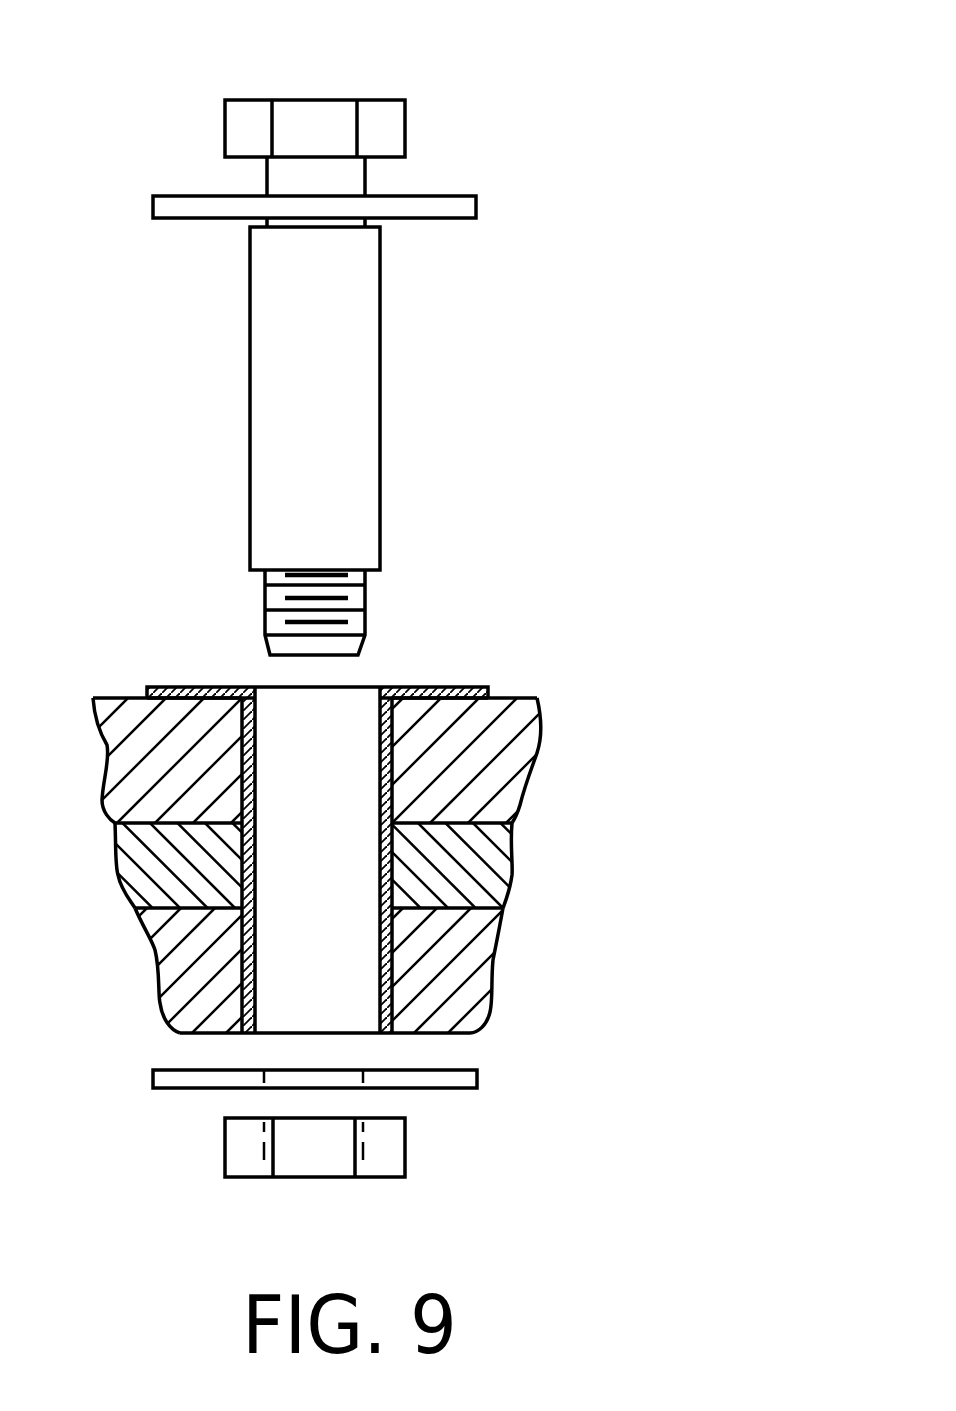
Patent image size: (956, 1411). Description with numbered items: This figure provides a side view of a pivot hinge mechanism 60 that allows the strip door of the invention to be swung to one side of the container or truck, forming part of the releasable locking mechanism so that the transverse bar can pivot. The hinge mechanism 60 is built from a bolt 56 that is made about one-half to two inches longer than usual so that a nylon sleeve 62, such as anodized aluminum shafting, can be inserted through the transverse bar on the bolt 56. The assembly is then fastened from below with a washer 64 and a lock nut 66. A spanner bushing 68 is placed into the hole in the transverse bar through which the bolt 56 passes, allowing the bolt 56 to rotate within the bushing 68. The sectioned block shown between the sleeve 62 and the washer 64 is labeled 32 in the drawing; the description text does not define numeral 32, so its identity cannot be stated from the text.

The hinge mechanism 60 is at (657, 120).
The bolt 56 is at (388, 106).
The nylon sleeve 62 is at (382, 396).
The spanner bushing 68 is at (485, 687).
The panel 32 is at (522, 745).
The washer 64 is at (153, 1081).
The lock nut 66 is at (405, 1148).